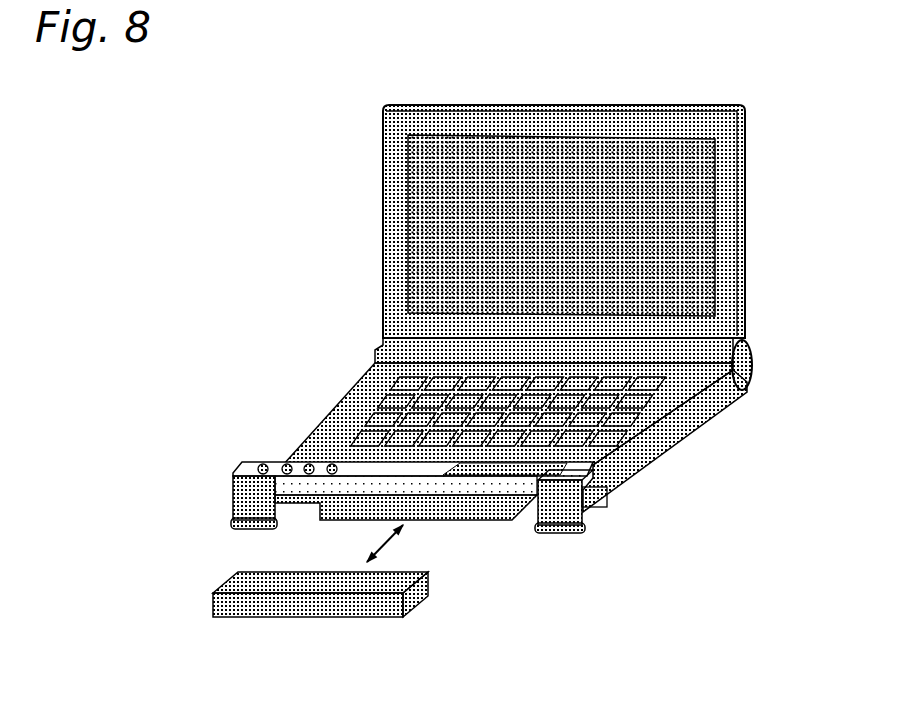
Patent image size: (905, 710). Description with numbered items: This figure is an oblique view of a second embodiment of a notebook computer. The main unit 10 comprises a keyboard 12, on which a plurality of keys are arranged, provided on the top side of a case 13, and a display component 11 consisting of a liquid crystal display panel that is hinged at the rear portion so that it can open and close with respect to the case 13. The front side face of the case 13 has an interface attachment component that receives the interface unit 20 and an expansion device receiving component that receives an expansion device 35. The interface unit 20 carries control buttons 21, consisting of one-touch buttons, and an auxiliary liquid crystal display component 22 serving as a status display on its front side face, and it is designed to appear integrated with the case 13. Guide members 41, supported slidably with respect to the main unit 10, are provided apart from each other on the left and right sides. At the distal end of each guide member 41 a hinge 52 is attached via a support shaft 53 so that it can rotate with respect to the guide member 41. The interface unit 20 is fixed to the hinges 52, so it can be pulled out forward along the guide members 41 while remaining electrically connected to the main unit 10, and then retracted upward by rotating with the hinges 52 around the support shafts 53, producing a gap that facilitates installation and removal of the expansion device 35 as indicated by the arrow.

The main unit 10 is at (350, 172).
The display component 11 is at (680, 216).
The keyboard 12 is at (378, 403).
The case 13 is at (323, 433).
The interface unit 20 is at (250, 460).
The control buttons 21 is at (283, 460).
The auxiliary liquid crystal display component 22 is at (507, 520).
The expansion device 35 is at (420, 600).
The guide member 41 is at (613, 498).
The hinge 52 is at (555, 510).
The support shaft 53 is at (580, 528).